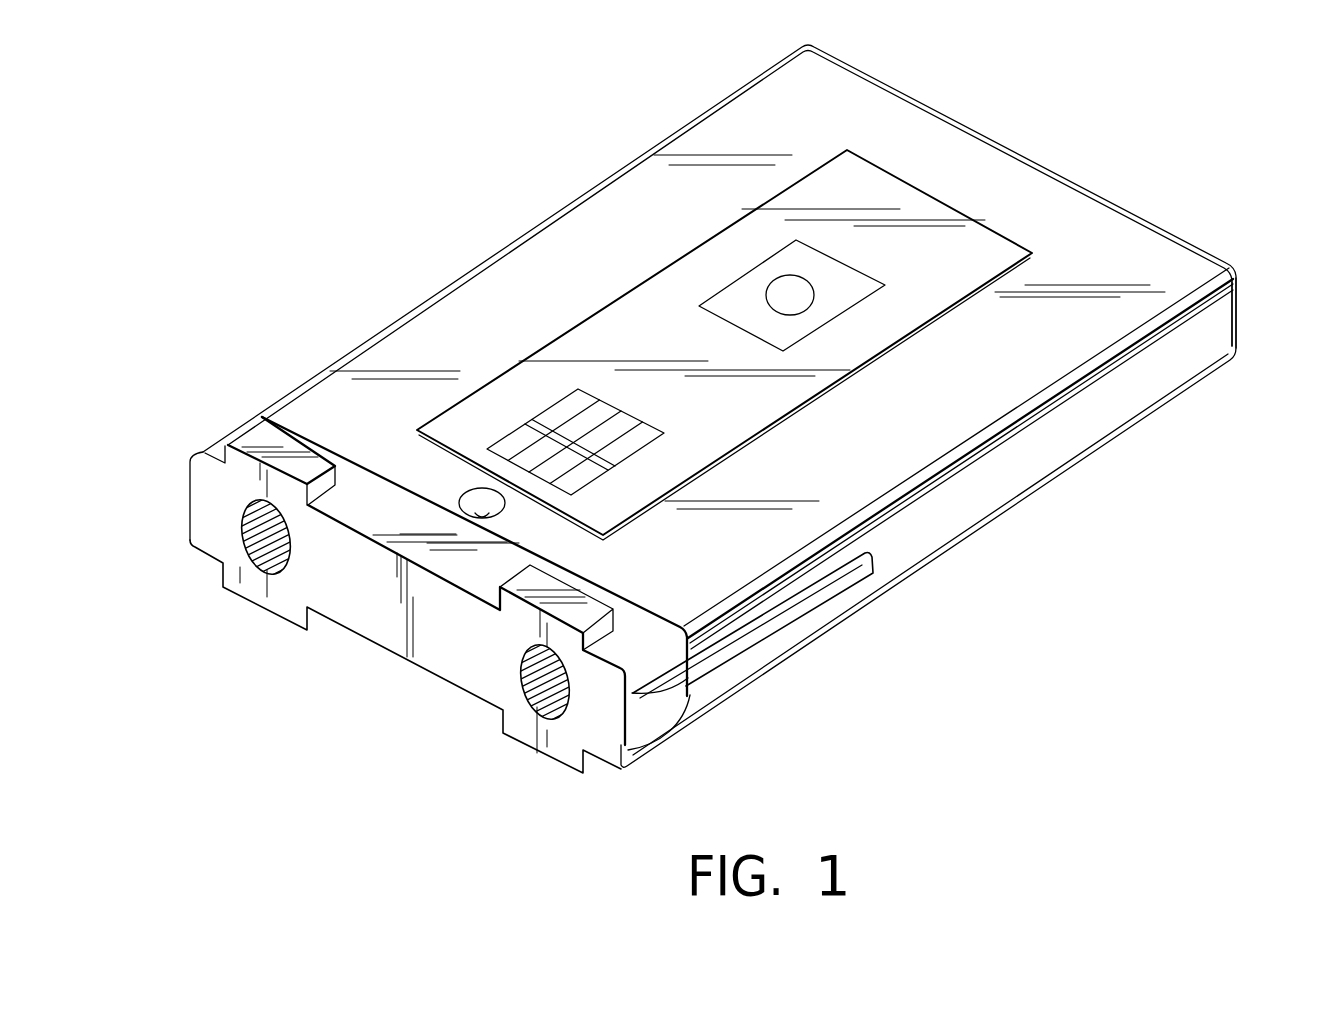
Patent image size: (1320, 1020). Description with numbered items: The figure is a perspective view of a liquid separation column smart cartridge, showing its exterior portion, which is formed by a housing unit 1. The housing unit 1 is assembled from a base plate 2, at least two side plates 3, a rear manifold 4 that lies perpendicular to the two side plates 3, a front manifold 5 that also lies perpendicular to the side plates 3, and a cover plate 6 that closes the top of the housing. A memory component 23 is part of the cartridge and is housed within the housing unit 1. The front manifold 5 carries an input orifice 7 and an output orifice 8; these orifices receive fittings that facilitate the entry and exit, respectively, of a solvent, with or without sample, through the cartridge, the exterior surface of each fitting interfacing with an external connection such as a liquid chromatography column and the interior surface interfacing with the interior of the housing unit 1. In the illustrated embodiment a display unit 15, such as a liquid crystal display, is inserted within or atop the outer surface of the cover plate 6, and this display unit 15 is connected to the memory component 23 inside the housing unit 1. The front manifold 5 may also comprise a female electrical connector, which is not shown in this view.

The housing unit 1 is at (996, 548).
The base plate 2 is at (885, 597).
The side plate 3 is at (1198, 352).
The rear manifold 4 is at (1238, 312).
The front manifold 5 is at (243, 586).
The cover plate 6 is at (812, 108).
The input orifice 7 is at (535, 683).
The output orifice 8 is at (262, 538).
The display unit 15 is at (804, 297).
The memory component 23 is at (636, 438).